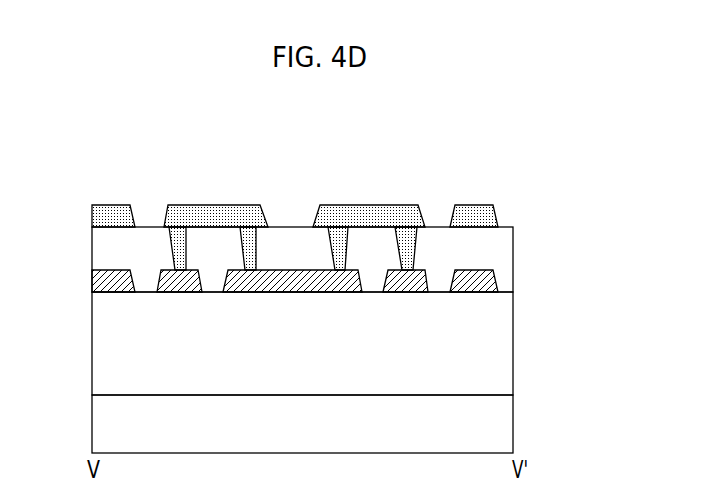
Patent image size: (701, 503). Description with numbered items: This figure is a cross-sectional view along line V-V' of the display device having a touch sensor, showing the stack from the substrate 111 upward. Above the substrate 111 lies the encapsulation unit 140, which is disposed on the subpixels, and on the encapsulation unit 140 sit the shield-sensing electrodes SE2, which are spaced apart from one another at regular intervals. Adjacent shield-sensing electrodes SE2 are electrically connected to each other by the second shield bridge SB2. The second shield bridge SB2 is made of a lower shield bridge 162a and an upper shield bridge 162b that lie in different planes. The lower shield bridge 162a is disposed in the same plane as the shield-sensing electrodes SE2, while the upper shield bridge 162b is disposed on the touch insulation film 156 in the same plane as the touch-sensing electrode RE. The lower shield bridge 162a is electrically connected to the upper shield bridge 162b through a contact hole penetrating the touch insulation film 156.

The second shield bridge SB2 is at (259, 163).
The lower shield bridge 162a is at (283, 268).
The upper shield bridge 162b is at (211, 206).
The touch-sensing electrode RE is at (112, 212).
The shield-sensing electrode SE2 is at (112, 294).
The touch insulation film 156 is at (505, 252).
The encapsulation unit 140 is at (505, 355).
The substrate 111 is at (505, 422).